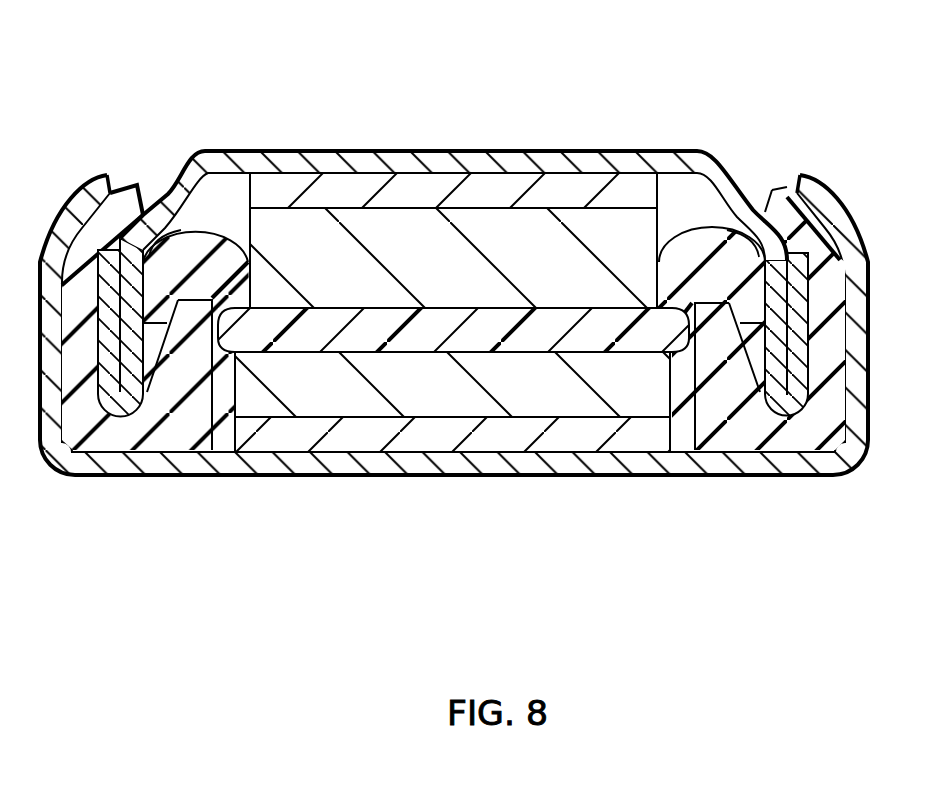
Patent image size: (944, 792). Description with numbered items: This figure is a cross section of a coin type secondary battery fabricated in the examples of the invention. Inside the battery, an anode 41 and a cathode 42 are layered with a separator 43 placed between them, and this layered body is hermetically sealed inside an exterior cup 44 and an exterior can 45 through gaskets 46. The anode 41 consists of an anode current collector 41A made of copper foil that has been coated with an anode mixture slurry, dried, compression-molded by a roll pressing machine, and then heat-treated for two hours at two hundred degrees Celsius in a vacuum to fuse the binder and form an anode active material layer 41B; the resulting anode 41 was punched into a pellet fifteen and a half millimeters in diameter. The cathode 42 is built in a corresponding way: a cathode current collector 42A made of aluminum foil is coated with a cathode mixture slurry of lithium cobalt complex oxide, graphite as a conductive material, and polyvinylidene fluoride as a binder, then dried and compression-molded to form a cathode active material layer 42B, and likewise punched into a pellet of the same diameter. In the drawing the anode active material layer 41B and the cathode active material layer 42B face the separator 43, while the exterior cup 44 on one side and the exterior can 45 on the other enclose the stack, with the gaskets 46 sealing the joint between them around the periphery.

The anode 41 is at (453, 155).
The anode current collector 41A is at (362, 193).
The anode active material layer 41B is at (513, 268).
The cathode 42 is at (452, 488).
The cathode current collector 42A is at (627, 560).
The cathode active material layer 42B is at (607, 385).
The separator 43 is at (617, 332).
The exterior cup 44 is at (244, 162).
The exterior can 45 is at (314, 466).
The gaskets 46 is at (166, 440).